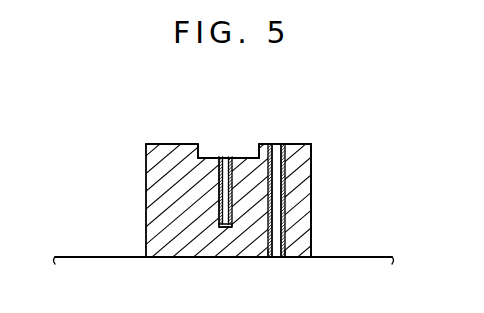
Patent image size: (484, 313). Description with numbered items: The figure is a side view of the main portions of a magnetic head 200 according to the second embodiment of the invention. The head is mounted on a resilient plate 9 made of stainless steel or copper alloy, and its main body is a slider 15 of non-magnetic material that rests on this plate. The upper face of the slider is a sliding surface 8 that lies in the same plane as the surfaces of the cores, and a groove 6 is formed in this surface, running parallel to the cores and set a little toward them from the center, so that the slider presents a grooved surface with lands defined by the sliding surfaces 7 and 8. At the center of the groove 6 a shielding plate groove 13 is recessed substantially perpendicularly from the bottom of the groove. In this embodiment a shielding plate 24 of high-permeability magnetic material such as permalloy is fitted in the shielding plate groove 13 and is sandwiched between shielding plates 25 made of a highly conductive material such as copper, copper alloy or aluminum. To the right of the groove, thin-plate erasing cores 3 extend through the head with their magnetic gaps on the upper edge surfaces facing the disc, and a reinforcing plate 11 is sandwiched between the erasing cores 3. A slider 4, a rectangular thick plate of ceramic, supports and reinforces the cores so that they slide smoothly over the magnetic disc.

The magnetic head 200 is at (312, 180).
The slider 15 is at (157, 185).
The sliding surface 8 is at (179, 143).
The groove 6 is at (245, 158).
The sliding surface 7 is at (290, 150).
The shielding plate groove 13 is at (219, 157).
The shielding plate 24 is at (225, 228).
The shielding plates 25 is at (219, 205).
The erasing cores 3 is at (283, 259).
The reinforcing plate 11 is at (277, 220).
The slider 4 is at (300, 212).
The resilient plate 9 is at (347, 257).